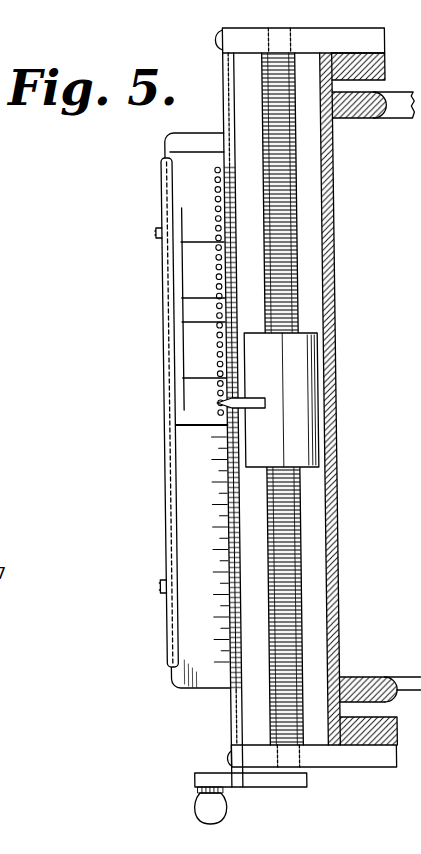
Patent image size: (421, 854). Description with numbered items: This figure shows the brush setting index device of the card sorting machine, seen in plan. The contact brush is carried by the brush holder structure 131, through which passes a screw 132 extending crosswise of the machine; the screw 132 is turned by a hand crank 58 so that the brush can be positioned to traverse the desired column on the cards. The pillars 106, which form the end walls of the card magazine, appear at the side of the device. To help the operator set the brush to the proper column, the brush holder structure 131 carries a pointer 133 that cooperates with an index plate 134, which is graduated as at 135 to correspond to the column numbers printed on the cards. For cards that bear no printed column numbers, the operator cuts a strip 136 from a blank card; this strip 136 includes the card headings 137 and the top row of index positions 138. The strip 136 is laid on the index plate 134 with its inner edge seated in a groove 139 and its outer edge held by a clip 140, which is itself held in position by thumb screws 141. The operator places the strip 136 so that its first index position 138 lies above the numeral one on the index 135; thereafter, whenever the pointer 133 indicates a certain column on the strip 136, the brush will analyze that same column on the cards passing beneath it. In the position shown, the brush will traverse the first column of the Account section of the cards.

The hand crank 58 is at (241, 786).
The pillars 106 is at (396, 108).
The brush holder structure 131 is at (292, 363).
The screw 132 is at (287, 608).
The pointer 133 is at (232, 397).
The index plate 134 is at (184, 682).
The graduations 135 is at (192, 596).
The card strip 136 is at (186, 184).
The card headings 137 is at (183, 395).
The index positions 138 is at (211, 171).
The groove 139 is at (226, 702).
The clip 140 is at (160, 407).
The thumb screws 141 is at (150, 233).